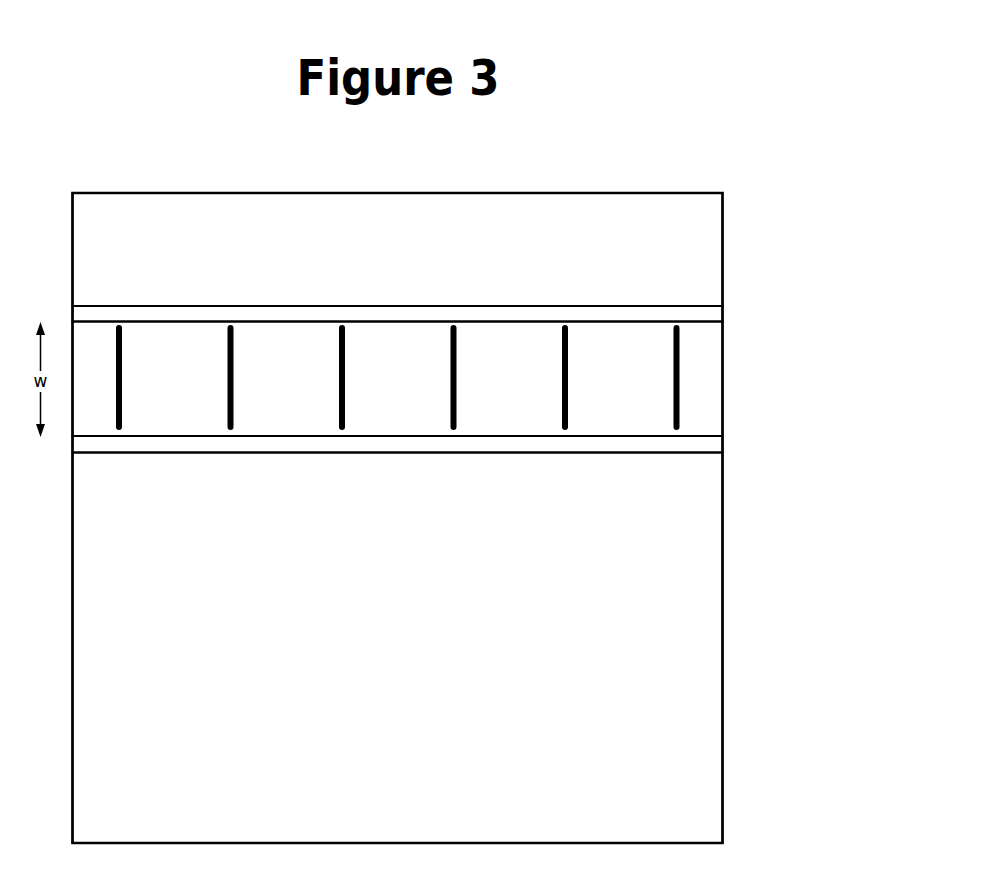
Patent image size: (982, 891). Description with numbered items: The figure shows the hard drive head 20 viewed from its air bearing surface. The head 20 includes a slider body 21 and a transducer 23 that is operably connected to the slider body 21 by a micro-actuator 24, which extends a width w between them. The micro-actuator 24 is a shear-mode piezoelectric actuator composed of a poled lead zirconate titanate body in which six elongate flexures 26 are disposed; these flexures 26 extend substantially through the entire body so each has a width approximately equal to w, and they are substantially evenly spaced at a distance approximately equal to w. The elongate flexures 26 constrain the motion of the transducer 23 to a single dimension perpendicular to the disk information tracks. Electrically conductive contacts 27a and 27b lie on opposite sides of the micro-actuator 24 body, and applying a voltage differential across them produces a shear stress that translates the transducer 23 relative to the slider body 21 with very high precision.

The head 20 is at (426, 472).
The slider body 21 is at (459, 648).
The transducer 23 is at (459, 245).
The micro-actuator 24 is at (459, 376).
The elongate flexures 26 is at (398, 377).
The electrically conductive contact 27a is at (398, 292).
The electrically conductive contact 27b is at (398, 466).